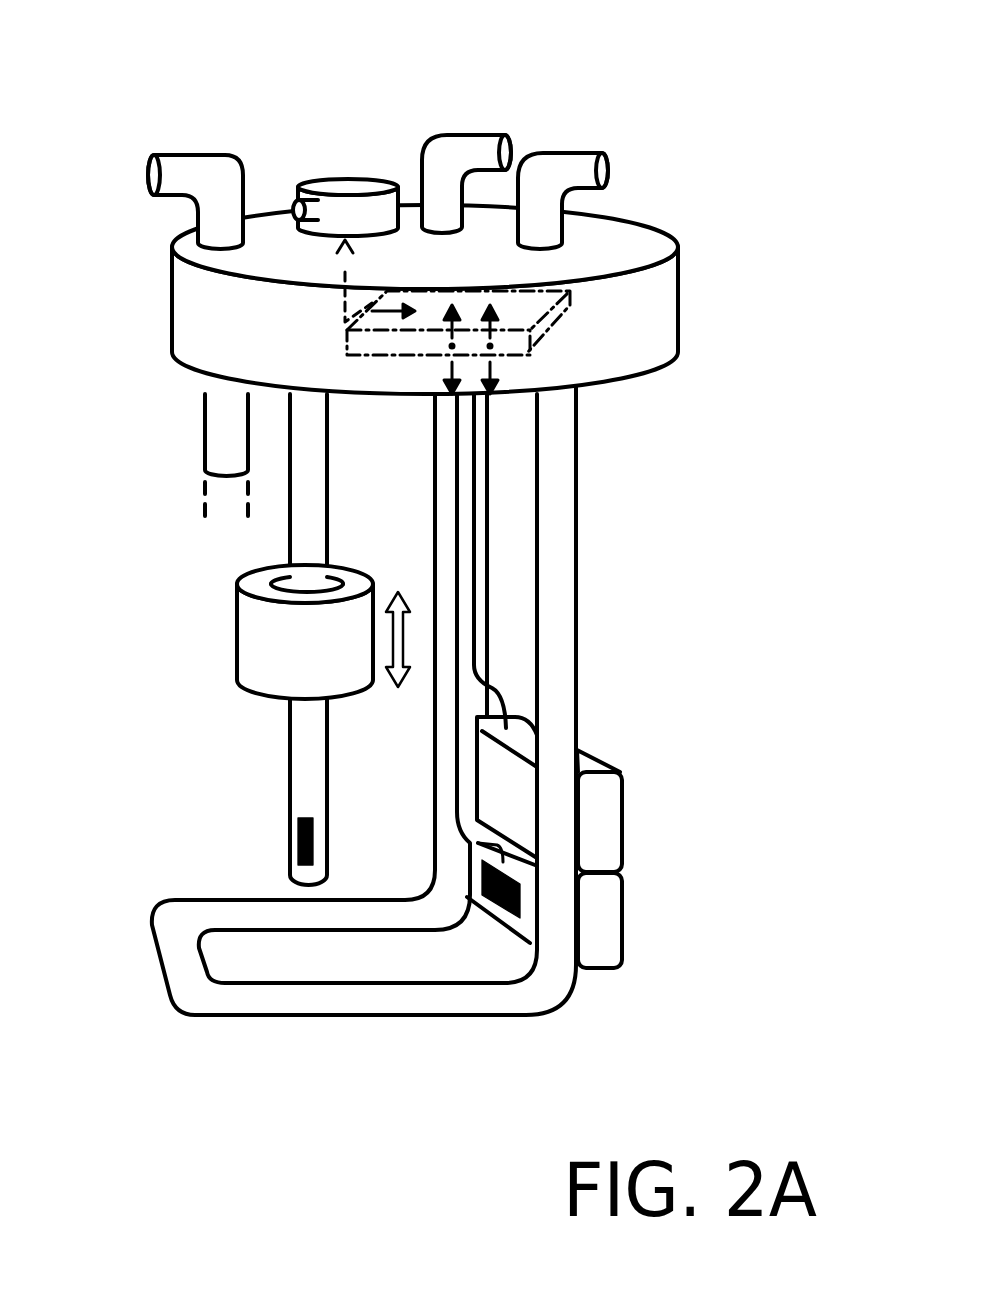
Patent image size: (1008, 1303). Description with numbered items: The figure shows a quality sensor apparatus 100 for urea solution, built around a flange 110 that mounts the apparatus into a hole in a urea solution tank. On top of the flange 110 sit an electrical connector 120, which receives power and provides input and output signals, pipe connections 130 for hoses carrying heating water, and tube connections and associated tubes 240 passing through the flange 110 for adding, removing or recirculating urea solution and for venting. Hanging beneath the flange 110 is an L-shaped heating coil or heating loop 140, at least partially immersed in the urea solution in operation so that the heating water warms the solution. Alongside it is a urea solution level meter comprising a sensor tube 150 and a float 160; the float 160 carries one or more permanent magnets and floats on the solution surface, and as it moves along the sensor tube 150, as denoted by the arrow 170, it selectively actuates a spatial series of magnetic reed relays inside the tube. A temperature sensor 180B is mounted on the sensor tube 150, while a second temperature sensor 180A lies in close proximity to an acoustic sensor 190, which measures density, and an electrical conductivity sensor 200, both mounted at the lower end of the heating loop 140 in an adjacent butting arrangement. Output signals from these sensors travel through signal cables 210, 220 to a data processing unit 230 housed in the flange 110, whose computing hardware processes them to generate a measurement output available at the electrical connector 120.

The quality sensor apparatus 100 is at (430, 551).
The flange 110 is at (301, 342).
The electrical connector 120 is at (347, 212).
The pipe connections 130 is at (452, 153).
The heating coil or heating loop 140 is at (335, 1000).
The sensor tube 150 is at (310, 487).
The float 160 is at (265, 647).
The arrow 170 is at (398, 628).
The temperature sensor 180A is at (500, 908).
The temperature sensor 180B is at (298, 840).
The acoustic sensor 190 is at (597, 795).
The electrical conductivity sensor 200 is at (600, 945).
The signal cable 210 is at (487, 487).
The signal cable 220 is at (463, 622).
The data processing unit 230 is at (523, 313).
The tube connections and associated tubes 240 is at (205, 178).